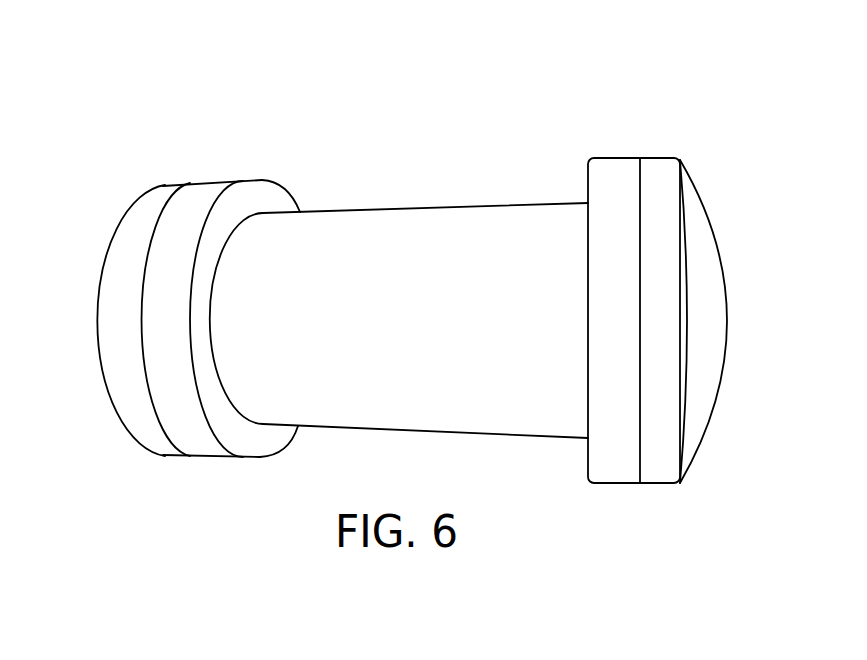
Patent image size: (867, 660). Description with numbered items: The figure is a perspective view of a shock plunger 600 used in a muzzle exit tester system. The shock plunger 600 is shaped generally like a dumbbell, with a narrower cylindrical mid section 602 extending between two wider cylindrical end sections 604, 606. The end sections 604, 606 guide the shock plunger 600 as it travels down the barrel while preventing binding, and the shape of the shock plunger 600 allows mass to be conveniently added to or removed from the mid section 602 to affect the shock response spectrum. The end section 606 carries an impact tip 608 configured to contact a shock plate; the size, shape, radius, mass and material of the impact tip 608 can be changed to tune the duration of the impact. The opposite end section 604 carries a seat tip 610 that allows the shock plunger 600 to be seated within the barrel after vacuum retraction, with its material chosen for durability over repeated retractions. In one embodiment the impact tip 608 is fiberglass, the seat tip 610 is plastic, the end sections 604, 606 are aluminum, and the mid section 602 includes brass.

The shock plunger 600 is at (433, 74).
The mid section 602 is at (403, 230).
The end section 604 is at (222, 182).
The end section 606 is at (613, 170).
The impact tip 608 is at (702, 293).
The seat tip 610 is at (100, 252).